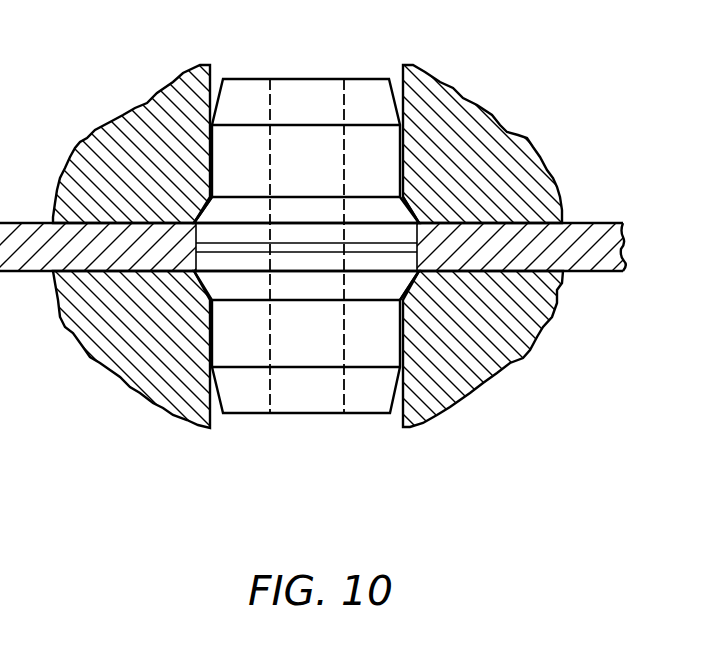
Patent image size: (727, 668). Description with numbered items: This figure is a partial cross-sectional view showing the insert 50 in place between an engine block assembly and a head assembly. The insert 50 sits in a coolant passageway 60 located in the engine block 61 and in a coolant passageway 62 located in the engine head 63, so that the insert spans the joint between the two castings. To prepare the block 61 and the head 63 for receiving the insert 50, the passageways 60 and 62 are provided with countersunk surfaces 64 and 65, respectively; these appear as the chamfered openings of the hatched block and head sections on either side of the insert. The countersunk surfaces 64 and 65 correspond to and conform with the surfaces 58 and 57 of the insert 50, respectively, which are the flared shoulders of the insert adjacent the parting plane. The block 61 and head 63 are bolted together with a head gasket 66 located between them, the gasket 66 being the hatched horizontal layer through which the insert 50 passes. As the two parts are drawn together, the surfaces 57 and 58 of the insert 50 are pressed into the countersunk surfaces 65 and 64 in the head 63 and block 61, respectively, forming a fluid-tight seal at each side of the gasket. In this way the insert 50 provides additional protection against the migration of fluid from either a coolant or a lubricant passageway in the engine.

The insert 50 is at (324, 72).
The surface 57 is at (205, 214).
The surface 58 is at (412, 288).
The coolant passageway 60 is at (283, 425).
The engine block 61 is at (463, 395).
The coolant passageway 62 is at (215, 83).
The engine head 63 is at (477, 100).
The countersunk surface 64 is at (197, 300).
The countersunk surface 65 is at (414, 206).
The head gasket 66 is at (597, 222).